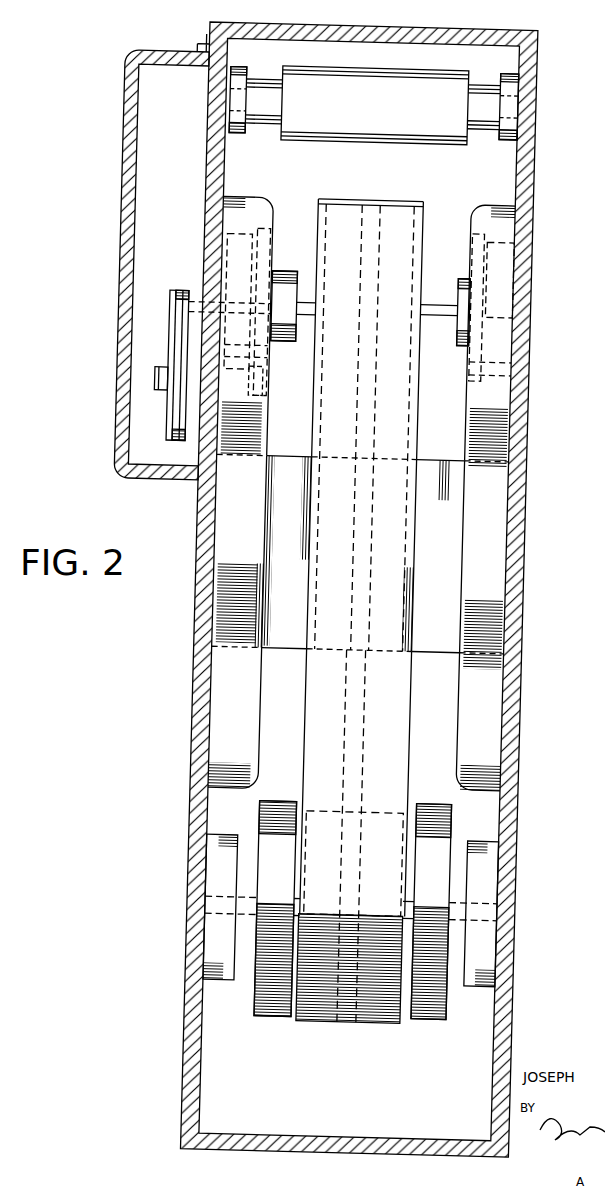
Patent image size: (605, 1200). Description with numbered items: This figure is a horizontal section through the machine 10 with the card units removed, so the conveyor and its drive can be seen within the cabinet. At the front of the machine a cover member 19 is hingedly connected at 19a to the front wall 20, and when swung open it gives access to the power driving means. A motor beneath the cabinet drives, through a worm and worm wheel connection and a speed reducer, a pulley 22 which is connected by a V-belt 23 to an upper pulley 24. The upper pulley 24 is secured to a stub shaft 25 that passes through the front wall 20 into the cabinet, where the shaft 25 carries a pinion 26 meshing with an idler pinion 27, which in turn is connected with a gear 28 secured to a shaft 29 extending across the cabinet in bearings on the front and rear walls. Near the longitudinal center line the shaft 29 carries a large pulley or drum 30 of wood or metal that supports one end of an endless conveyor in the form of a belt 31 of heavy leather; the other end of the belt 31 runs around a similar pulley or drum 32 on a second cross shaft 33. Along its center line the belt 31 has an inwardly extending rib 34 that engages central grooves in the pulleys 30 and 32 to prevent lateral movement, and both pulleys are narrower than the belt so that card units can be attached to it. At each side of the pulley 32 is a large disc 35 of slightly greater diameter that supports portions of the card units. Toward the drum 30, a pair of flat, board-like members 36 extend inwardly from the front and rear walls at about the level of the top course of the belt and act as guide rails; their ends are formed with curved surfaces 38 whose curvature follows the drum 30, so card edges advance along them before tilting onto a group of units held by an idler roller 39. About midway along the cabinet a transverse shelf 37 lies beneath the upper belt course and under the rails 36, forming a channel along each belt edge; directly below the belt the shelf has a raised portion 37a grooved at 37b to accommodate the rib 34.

The apparatus 10 is at (336, 550).
The cover member 19 is at (125, 264).
The hinge connection 19a is at (170, 30).
The front wall 20 is at (330, 588).
The pulley 22 is at (109, 363).
The V-belt 23 is at (158, 365).
The upper pulley 24 is at (117, 364).
The stub shaft 25 is at (107, 378).
The pinion 26 is at (273, 380).
The idler pinion 27 is at (262, 356).
The gear 28 is at (369, 286).
The shaft 29 is at (370, 285).
The pulley or drum 30 is at (367, 407).
The belt 31 is at (361, 519).
The pulley or drum 32 is at (354, 782).
The shaft 33 is at (351, 892).
The rib 34 is at (329, 836).
The disc 35 is at (349, 932).
The board-like member 36 is at (358, 624).
The shelf 37 is at (246, 442).
The raised portion 37a is at (261, 578).
The groove 37b is at (299, 507).
The curved surface 38 is at (367, 304).
The idler roller 39 is at (373, 119).